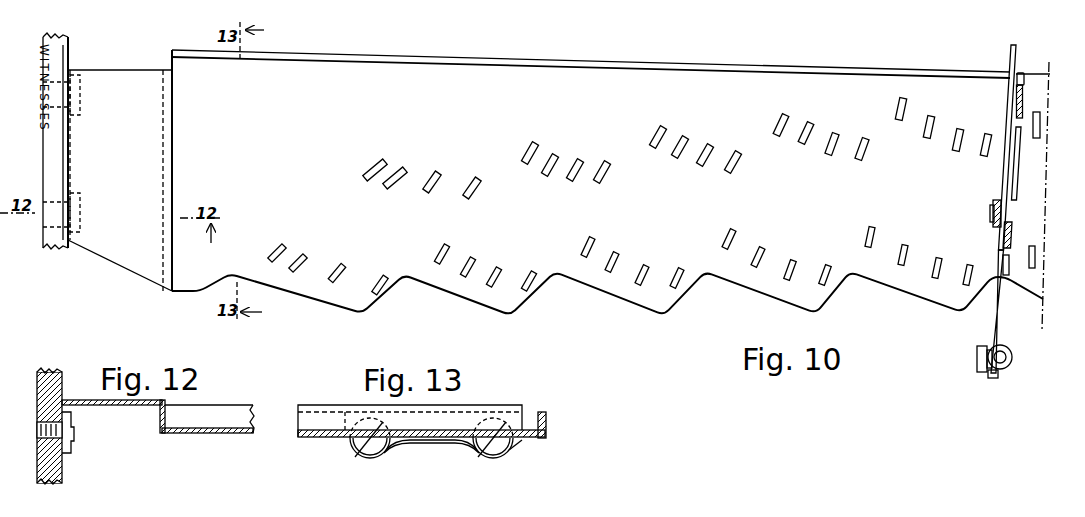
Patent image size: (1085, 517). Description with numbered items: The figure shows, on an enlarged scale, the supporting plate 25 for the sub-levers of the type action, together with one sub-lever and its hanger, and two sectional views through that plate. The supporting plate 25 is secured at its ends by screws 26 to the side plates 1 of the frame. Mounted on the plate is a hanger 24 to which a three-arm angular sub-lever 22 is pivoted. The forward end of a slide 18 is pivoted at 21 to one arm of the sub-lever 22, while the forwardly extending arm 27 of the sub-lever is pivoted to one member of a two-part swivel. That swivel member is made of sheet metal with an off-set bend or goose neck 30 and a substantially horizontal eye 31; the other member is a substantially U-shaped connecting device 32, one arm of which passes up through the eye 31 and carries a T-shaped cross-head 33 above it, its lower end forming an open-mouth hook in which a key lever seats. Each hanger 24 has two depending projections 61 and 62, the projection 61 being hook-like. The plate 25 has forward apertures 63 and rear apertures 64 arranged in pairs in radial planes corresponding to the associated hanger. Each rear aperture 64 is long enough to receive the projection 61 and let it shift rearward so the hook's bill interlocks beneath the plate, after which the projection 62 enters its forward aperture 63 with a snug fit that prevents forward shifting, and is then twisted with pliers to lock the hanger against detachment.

In FIG. 10, the side plate 1 is at (57, 158).
In FIG. 12, the side plate 1 is at (62, 380).
In FIG. 10, the slide 18 is at (1001, 180).
In FIG. 10, the pivot 21 is at (995, 215).
In FIG. 10, the sub-lever 22 is at (1004, 262).
In FIG. 10, the hanger 24 is at (1016, 165).
In FIG. 10, the supporting plate 25 is at (559, 190).
In FIG. 12, the supporting plate 25 is at (143, 406).
In FIG. 13, the supporting plate 25 is at (330, 438).
In FIG. 10, the screw 26 is at (80, 113).
In FIG. 12, the screw 26 is at (74, 441).
In FIG. 13, the screw 26 is at (388, 452).
In FIG. 10, the forwardly extending arm 27 is at (998, 317).
In FIG. 10, the goose neck 30 is at (979, 357).
In FIG. 10, the eye 31 is at (1004, 349).
In FIG. 10, the connecting device 32 is at (1008, 358).
In FIG. 10, the cross-head 33 is at (998, 373).
In FIG. 10, the projection 61 is at (1023, 101).
In FIG. 10, the projection 62 is at (1011, 242).
In FIG. 10, the forward aperture 63 is at (377, 283).
In FIG. 10, the rear aperture 64 is at (470, 180).